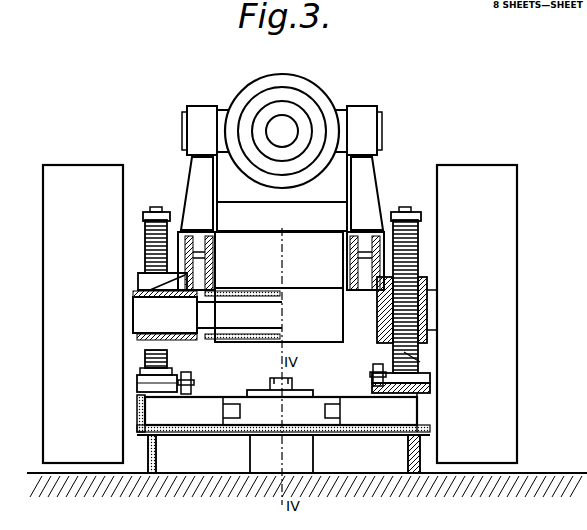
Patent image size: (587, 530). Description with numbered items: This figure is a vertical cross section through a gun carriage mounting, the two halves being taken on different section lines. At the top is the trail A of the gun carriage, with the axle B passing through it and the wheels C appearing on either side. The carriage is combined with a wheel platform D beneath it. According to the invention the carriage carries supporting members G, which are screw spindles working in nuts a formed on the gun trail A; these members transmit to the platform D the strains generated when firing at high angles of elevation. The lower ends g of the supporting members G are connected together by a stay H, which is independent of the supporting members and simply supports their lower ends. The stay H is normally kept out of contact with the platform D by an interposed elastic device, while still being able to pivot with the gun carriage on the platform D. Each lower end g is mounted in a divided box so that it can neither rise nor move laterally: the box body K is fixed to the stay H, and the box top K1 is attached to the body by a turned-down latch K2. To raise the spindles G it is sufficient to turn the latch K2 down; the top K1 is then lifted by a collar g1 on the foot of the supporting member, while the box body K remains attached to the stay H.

The trail A is at (348, 256).
The axle B is at (242, 308).
The wheels C is at (46, 348).
The wheel platform D is at (167, 452).
The supporting members G is at (152, 222).
The stay H is at (155, 413).
The box body K is at (143, 386).
The box top K1 is at (460, 371).
The latch K2 is at (192, 385).
The nuts a is at (140, 287).
The lower end of supporting member g is at (420, 398).
The collar g1 is at (425, 367).